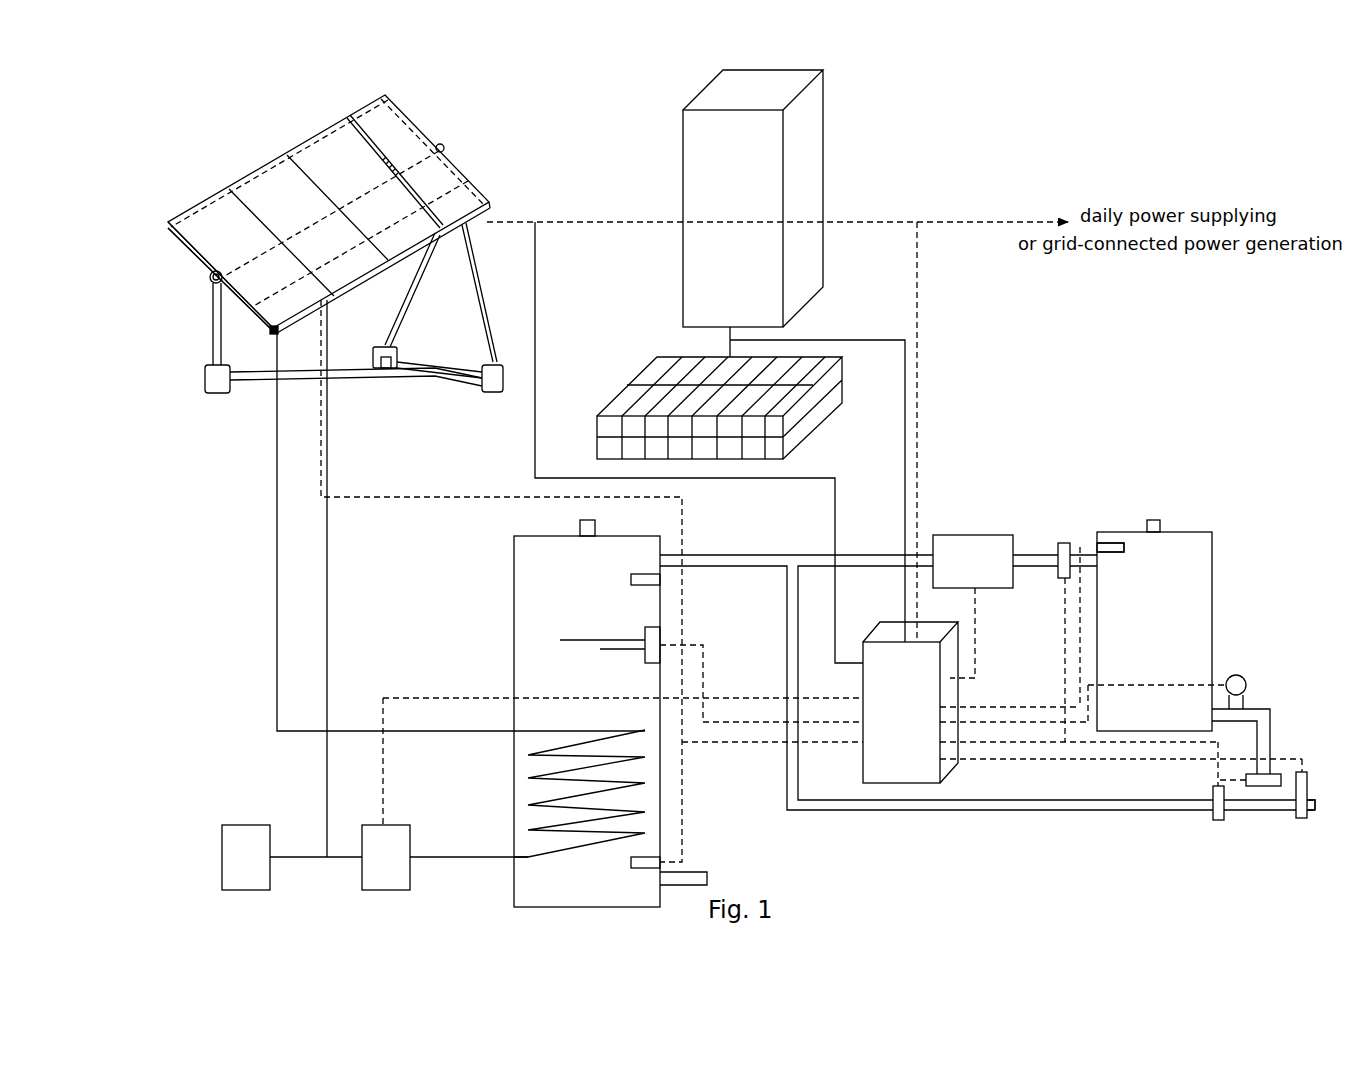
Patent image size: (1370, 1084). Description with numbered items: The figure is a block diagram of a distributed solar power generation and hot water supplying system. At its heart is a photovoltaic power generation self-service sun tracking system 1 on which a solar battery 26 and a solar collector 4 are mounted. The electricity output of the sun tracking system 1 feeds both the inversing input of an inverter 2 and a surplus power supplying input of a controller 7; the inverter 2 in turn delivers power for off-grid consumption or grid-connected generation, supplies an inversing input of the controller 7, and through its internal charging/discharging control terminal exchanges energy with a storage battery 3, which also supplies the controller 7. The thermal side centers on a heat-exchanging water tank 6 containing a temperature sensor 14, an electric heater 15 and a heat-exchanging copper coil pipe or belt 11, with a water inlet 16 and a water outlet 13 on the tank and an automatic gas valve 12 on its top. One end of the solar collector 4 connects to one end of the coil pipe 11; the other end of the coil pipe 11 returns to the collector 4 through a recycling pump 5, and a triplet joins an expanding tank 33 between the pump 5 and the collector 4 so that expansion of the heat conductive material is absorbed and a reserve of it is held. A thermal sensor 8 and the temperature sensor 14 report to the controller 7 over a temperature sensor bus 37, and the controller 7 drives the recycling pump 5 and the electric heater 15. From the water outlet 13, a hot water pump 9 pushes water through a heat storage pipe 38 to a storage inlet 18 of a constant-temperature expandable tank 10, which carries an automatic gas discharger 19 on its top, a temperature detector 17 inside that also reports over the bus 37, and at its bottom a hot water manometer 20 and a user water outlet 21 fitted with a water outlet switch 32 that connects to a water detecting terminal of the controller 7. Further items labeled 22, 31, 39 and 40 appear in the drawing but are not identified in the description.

The photovoltaic power generation self-service sun tracking system 1 is at (333, 259).
The inverter 2 is at (823, 122).
The storage battery 3 is at (627, 382).
The solar collector 4 is at (273, 302).
The recycling pump 5 is at (397, 825).
The heat-exchanging water tank 6 is at (590, 705).
The controller 7 is at (903, 785).
The thermal sensor 8 is at (320, 305).
The hot water pump 9 is at (973, 535).
The constant-temperature expandable tank 10 is at (1173, 590).
The heat-exchanging copper coil pipe or belt 11 is at (533, 762).
The automatic gas valve 12 is at (582, 525).
The water outlet 13 is at (705, 558).
The temperature sensor 14 is at (660, 858).
The electric heater 15 is at (663, 657).
The water inlet 16 is at (697, 878).
The temperature detector 17 is at (1108, 548).
The storage inlet 18 is at (1085, 557).
The automatic gas discharger 19 is at (1152, 519).
The hot water manometer 20 is at (1233, 676).
The user water outlet 21 is at (1312, 800).
The pivot joint 22 is at (273, 332).
The solar battery 26 is at (395, 138).
The valve 31 is at (1058, 562).
The water outlet switch 32 is at (1302, 808).
The expanding tank 33 is at (245, 825).
The temperature sensor bus 37 is at (683, 812).
The heat storage pipe 38 is at (1032, 557).
The return pipe 39 is at (1082, 812).
The valve 40 is at (1220, 814).